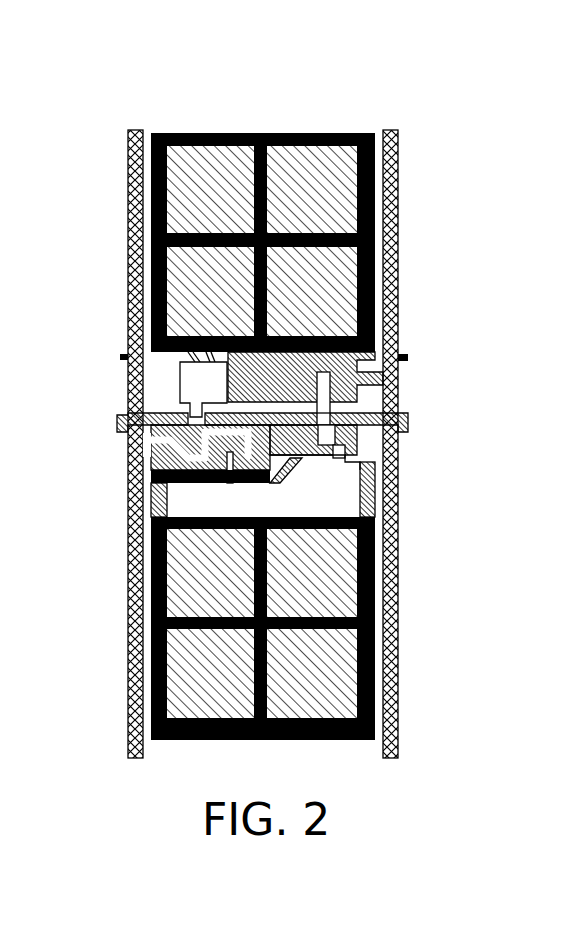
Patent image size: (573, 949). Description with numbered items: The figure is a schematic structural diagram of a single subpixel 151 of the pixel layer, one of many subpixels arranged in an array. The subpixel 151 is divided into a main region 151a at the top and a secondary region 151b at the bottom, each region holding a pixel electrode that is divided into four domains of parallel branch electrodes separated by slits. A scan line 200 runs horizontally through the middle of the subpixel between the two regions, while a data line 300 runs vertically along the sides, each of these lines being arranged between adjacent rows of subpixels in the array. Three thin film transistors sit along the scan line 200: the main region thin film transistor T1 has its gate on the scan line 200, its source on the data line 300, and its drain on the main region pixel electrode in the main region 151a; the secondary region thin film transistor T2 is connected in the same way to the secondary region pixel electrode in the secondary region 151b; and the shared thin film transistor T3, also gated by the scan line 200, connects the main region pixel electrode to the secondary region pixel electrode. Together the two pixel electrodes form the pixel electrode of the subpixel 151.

The subpixel 151 is at (257, 398).
The main region 151a is at (306, 222).
The secondary region 151b is at (307, 648).
The data line 300 is at (398, 170).
The scan line 200 is at (398, 417).
The main region thin film transistor T1 is at (190, 413).
The secondary region thin film transistor T2 is at (186, 447).
The shared thin film transistor T3 is at (322, 437).